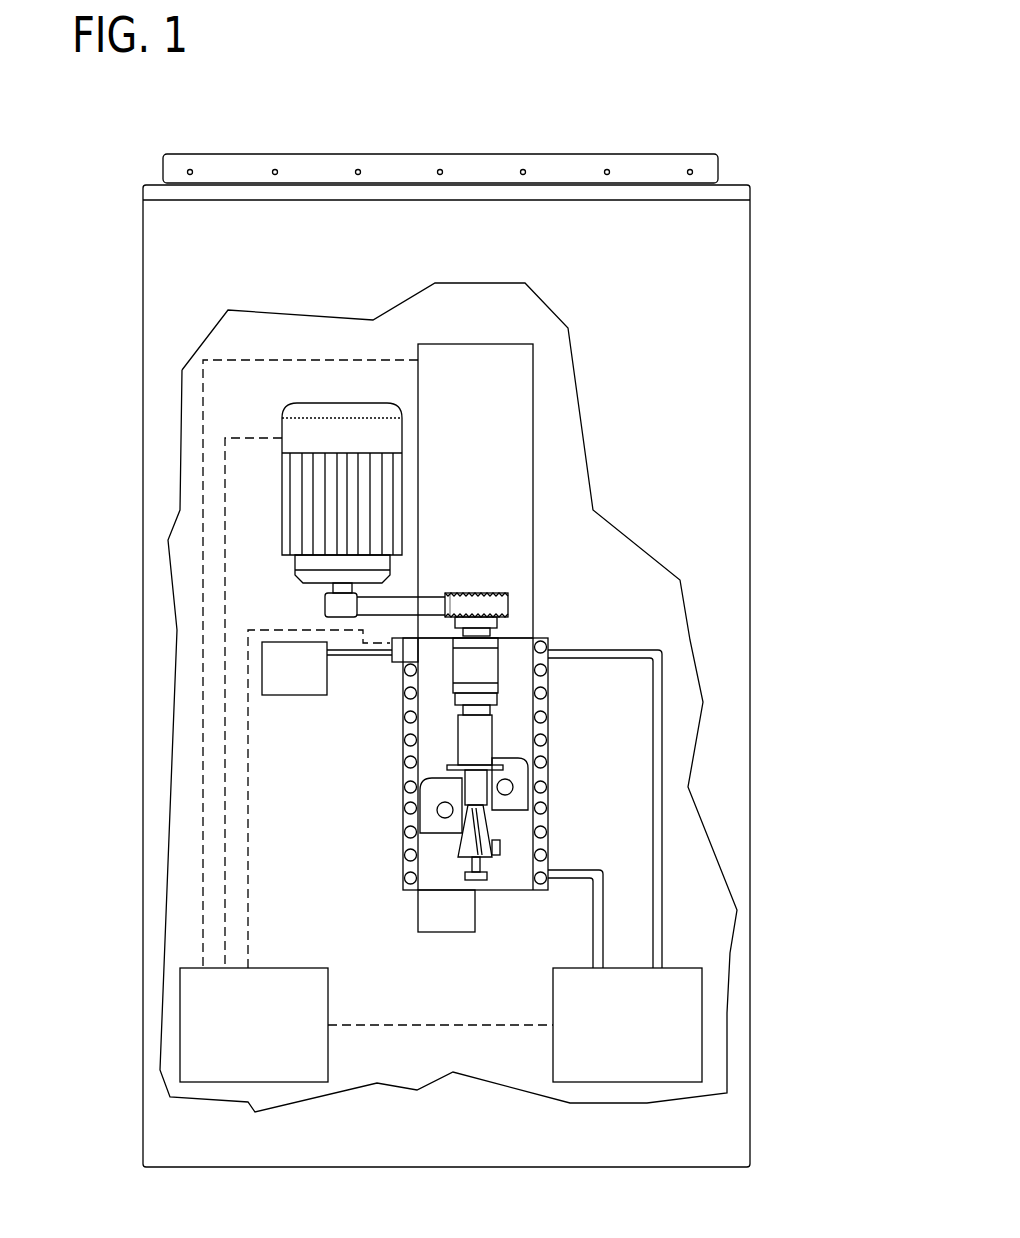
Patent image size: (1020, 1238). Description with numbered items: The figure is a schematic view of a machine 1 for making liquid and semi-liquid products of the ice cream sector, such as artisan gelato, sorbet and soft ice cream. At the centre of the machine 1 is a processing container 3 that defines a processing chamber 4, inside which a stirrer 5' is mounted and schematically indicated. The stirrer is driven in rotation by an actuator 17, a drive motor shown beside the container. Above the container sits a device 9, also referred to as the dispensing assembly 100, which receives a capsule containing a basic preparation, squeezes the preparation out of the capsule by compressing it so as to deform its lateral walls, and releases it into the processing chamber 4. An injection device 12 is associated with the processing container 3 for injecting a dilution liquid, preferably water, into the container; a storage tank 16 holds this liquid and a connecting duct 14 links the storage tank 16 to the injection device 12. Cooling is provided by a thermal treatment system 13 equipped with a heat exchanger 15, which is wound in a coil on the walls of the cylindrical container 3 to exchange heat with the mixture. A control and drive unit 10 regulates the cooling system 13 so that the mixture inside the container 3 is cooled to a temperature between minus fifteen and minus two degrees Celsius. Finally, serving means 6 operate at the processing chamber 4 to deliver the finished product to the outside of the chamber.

The machine 1 is at (738, 128).
The processing container 3 is at (607, 764).
The processing chamber 4 is at (441, 745).
The tool 5' is at (485, 893).
The serving means 6 is at (404, 910).
The device for receiving and treating a capsule 9 is at (563, 490).
The dispensing assembly 100 is at (553, 476).
The control and drive unit 10 is at (267, 1035).
The injection device 12 is at (395, 674).
The thermal treatment system 13 is at (640, 1035).
The connecting duct 14 is at (350, 665).
The heat exchanger 15 is at (556, 744).
The storage tank 16 is at (309, 681).
The actuator 17 is at (274, 517).